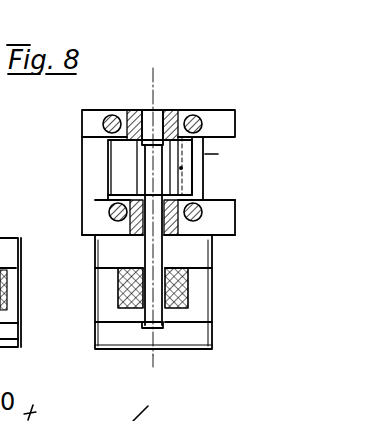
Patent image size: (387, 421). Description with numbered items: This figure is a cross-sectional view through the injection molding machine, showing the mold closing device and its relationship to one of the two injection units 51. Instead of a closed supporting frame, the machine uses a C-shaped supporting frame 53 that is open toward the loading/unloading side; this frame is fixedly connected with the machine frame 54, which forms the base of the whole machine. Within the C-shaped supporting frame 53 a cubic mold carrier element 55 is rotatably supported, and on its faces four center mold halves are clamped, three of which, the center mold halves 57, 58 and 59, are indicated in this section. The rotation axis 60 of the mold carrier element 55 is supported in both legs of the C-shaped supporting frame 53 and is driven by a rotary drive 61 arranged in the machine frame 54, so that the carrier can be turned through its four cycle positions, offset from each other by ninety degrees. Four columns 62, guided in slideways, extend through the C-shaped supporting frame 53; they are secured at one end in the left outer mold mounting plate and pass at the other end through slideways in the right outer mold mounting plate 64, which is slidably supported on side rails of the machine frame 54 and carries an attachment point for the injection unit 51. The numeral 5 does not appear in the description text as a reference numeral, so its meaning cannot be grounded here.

The clamping device 5 is at (155, 70).
The injection unit 51 is at (50, 399).
The C-shaped supporting frame 53 is at (91, 139).
The machine frame 54 is at (232, 336).
The mold carrier element 55 is at (220, 154).
The center mold half 57 is at (122, 163).
The center mold half 58 is at (148, 179).
The center mold half 59 is at (182, 190).
The rotation axis 60 is at (155, 360).
The rotary drive 61 is at (182, 283).
The column 62 is at (112, 116).
The right outer mold mounting plate 64 is at (181, 168).